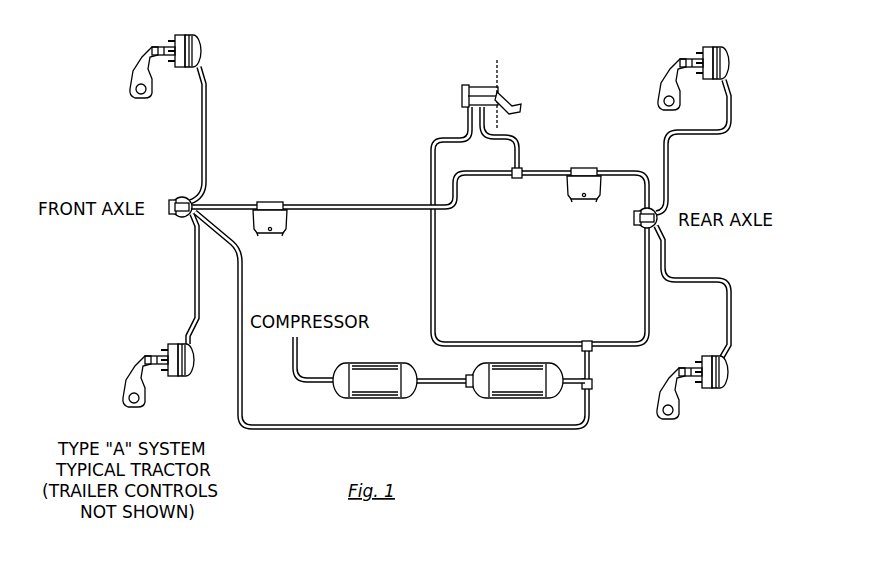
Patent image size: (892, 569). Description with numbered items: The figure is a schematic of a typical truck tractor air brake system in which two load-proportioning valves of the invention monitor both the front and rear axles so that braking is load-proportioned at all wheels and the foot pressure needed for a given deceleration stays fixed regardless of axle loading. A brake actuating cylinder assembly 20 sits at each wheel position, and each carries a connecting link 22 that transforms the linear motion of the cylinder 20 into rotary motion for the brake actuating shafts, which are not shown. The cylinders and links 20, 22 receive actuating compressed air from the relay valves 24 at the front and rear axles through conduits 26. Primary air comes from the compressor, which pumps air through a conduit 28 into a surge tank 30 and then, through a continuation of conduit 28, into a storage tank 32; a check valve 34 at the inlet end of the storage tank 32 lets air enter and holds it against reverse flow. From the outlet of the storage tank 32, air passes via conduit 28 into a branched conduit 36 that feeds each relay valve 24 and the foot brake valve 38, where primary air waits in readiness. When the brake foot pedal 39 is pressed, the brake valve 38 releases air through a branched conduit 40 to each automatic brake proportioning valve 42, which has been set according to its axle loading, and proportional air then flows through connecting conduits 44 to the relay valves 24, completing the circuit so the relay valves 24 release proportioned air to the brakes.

The brake actuating cylinder assembly 20 is at (197, 38).
The connecting link 22 is at (136, 64).
The relay valve 24 is at (178, 196).
The conduit 26 is at (206, 107).
The conduit 28 is at (306, 372).
The surge tank 30 is at (392, 365).
The storage tank 32 is at (502, 366).
The check valve 34 is at (463, 394).
The branched conduit 36 is at (470, 342).
The foot brake valve 38 is at (471, 77).
The brake foot pedal 39 is at (509, 101).
The branched conduit 40 is at (517, 146).
The automatic brake proportioning valve 42 is at (282, 199).
The connecting conduit 44 is at (220, 206).